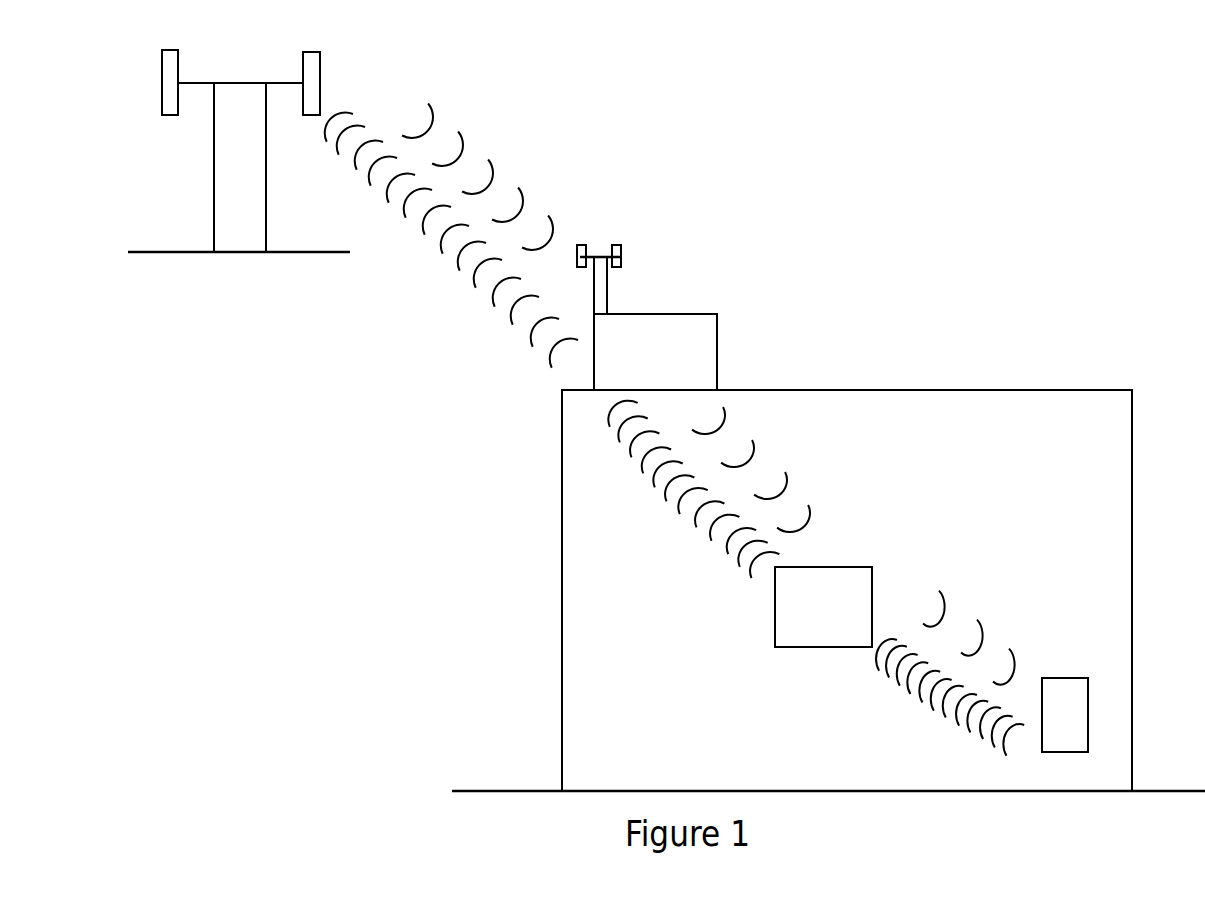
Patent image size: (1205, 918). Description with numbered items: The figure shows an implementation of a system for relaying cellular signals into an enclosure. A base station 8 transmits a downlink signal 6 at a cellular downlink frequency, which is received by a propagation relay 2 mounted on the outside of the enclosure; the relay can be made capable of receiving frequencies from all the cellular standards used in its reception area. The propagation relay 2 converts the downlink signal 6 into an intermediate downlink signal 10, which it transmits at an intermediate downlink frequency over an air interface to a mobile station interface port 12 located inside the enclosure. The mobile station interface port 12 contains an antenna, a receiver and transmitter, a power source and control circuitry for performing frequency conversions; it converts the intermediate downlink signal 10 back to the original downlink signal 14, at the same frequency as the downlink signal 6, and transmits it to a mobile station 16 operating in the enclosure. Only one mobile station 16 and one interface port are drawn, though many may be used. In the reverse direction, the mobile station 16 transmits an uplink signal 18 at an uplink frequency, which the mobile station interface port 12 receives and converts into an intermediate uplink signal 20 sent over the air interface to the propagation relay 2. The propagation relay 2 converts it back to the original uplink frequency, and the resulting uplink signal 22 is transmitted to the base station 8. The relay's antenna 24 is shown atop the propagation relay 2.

The propagation relay 2 is at (648, 376).
The downlink signal 6 is at (484, 162).
The base station 8 is at (214, 185).
The intermediate downlink signal 10 is at (754, 457).
The mobile station interface port 12 is at (811, 629).
The original downlink signal 14 is at (983, 636).
The mobile station 16 is at (1053, 739).
The uplink signal 18 is at (950, 697).
The intermediate uplink signal 20 is at (680, 510).
The uplink signal 22 is at (443, 250).
The pico repeater antenna 24 is at (593, 256).